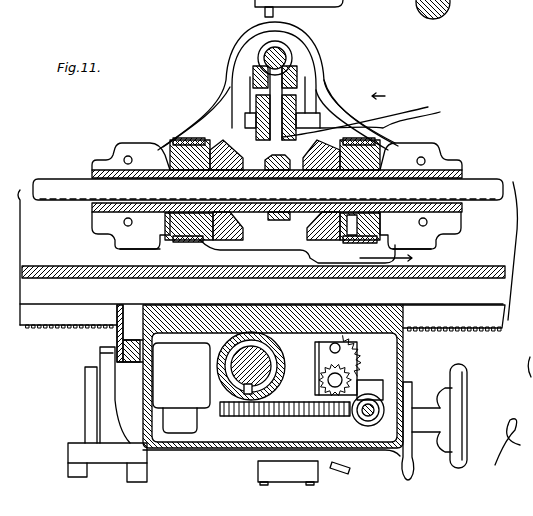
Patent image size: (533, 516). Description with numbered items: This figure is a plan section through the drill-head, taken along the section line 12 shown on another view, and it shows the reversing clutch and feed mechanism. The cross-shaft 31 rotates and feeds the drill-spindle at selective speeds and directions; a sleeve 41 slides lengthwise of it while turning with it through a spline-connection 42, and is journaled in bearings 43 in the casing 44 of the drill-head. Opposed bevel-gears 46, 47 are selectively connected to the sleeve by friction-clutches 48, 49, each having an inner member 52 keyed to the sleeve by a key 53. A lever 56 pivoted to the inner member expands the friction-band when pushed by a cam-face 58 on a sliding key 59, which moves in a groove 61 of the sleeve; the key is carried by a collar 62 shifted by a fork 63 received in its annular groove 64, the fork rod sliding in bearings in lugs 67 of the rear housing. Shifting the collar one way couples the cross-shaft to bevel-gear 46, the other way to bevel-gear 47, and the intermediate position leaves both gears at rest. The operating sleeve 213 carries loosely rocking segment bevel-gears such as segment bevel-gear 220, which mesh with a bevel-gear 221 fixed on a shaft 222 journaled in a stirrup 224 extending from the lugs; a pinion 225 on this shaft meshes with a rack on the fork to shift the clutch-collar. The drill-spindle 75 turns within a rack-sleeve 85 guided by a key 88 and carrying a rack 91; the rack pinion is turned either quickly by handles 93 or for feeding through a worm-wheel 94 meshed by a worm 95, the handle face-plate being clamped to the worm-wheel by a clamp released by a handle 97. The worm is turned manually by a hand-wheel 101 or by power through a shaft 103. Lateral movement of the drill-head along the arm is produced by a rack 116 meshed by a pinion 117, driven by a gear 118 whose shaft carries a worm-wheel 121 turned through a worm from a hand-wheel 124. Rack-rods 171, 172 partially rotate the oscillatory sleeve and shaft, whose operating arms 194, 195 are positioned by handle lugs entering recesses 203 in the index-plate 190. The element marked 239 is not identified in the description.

The line 12— 12 is at (397, 178).
The cross-shaft 31 is at (500, 185).
The sleeve 41 is at (466, 170).
The spline-connection 42 is at (110, 210).
The bearings 43 is at (135, 148).
The casing 44 is at (333, 250).
The bevel-gear 46 is at (238, 232).
The bevel-gear 47 is at (315, 232).
The friction-clutch 48 is at (175, 233).
The friction-clutch 49 is at (428, 241).
The inner member 52 is at (395, 143).
The key 53 is at (172, 150).
The lever 56 is at (197, 240).
The cam-face 58 is at (370, 202).
The sliding key 59 is at (237, 214).
The groove 61 is at (383, 220).
The collar 62 is at (300, 213).
The fork 63 is at (248, 137).
The annular groove 64 is at (272, 218).
The lugs 67 is at (318, 116).
The drill-spindle 75 is at (222, 360).
The rack-sleeve 85 is at (227, 373).
The key 88 is at (255, 390).
The rack 91 is at (272, 362).
The handles 93 is at (257, 483).
The worm-wheel 94 is at (264, 406).
The worm 95 is at (416, 431).
The handle 97 is at (349, 472).
The hand-wheel 101 is at (328, 5).
The shaft 103 is at (378, 400).
The rack 116 is at (487, 330).
The pinion 117 is at (428, 328).
The gear 118 is at (347, 377).
The worm-wheel 121 is at (357, 350).
The hand-wheel 124 is at (465, 382).
The rack-rod 171 is at (118, 343).
The rack-rod 172 is at (130, 368).
The index-plate 190 is at (107, 457).
The operating arm 194 is at (92, 420).
The operating arm 195 is at (140, 465).
The recesses 203 is at (123, 452).
The operating sleeve 213 is at (272, 47).
The segment bevel-gear 220 is at (297, 68).
The bevel-gear 221 is at (300, 80).
The shaft 222 is at (383, 128).
The stirrup 224 is at (318, 100).
The pinion 225 is at (368, 118).
The nut 239 is at (283, 53).